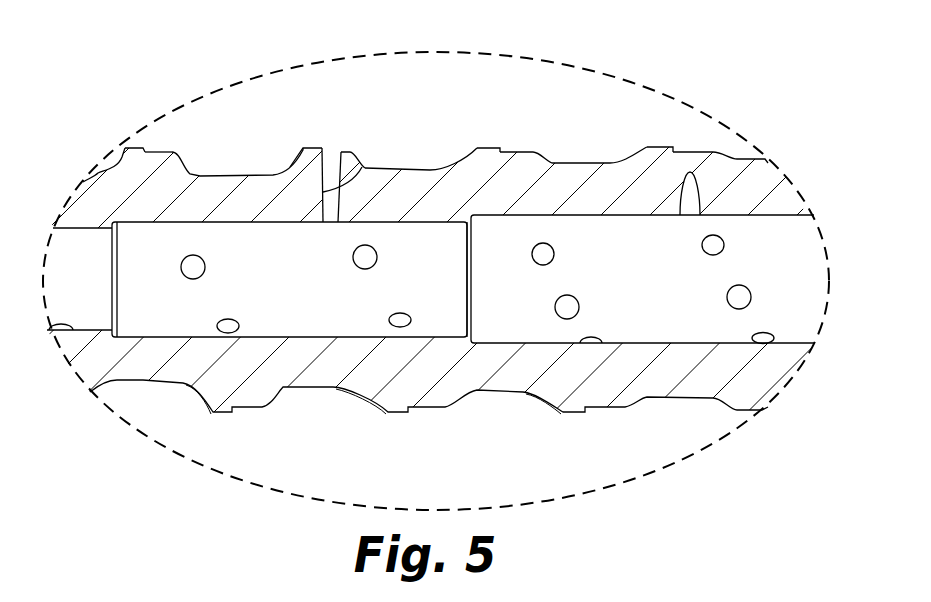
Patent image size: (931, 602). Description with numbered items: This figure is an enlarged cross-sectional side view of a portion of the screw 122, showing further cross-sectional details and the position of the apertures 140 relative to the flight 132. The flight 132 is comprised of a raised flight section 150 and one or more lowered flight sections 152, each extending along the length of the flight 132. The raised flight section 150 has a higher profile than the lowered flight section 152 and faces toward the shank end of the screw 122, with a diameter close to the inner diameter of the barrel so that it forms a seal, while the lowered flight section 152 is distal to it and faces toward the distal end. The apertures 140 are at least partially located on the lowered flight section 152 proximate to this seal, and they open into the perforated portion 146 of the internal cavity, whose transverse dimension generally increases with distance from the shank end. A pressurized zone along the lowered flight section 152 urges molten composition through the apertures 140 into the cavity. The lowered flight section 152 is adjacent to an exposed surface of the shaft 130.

The screw 122 is at (668, 58).
The shaft 130 is at (430, 170).
The flight 132 is at (312, 138).
The apertures 140 is at (362, 167).
The perforated portion 146 is at (643, 291).
The raised flight section 150 is at (303, 147).
The lowered flight section 152 is at (343, 152).